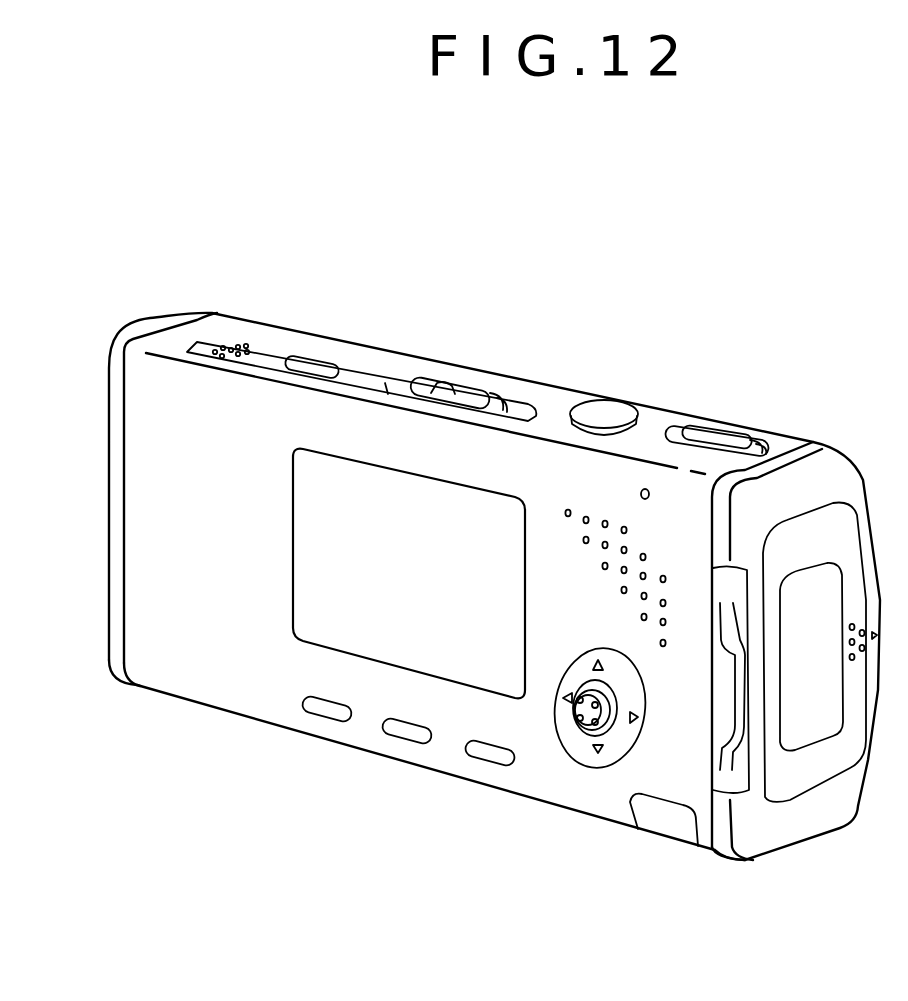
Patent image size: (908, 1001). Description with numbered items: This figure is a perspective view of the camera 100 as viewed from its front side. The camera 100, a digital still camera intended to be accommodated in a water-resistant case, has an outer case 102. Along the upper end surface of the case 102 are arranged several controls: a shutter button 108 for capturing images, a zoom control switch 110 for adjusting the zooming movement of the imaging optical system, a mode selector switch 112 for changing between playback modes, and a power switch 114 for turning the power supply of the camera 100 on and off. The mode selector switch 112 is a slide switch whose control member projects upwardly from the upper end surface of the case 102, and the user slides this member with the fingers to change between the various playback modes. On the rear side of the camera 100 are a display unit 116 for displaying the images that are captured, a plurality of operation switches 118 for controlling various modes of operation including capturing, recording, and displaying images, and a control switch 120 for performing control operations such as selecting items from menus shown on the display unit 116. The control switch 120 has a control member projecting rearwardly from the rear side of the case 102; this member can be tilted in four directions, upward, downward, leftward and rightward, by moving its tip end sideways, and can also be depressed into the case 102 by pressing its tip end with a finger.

The camera 100 is at (165, 240).
The outer case 102 is at (173, 697).
The shutter button 108 is at (615, 407).
The zoom control switch 110 is at (735, 435).
The mode selector switch 112 is at (465, 387).
The power switch 114 is at (308, 362).
The display unit 116 is at (317, 633).
The operation switches 118 is at (340, 723).
The control switch 120 is at (587, 733).